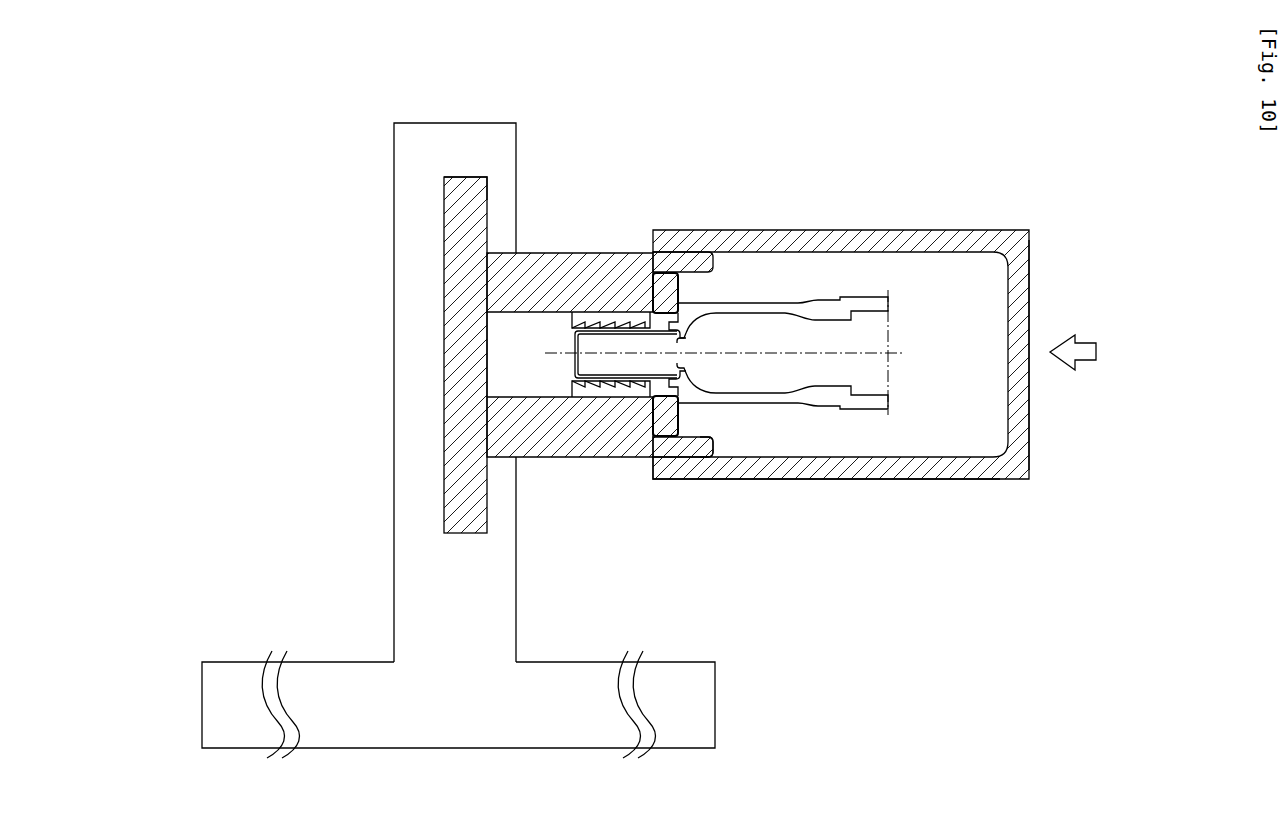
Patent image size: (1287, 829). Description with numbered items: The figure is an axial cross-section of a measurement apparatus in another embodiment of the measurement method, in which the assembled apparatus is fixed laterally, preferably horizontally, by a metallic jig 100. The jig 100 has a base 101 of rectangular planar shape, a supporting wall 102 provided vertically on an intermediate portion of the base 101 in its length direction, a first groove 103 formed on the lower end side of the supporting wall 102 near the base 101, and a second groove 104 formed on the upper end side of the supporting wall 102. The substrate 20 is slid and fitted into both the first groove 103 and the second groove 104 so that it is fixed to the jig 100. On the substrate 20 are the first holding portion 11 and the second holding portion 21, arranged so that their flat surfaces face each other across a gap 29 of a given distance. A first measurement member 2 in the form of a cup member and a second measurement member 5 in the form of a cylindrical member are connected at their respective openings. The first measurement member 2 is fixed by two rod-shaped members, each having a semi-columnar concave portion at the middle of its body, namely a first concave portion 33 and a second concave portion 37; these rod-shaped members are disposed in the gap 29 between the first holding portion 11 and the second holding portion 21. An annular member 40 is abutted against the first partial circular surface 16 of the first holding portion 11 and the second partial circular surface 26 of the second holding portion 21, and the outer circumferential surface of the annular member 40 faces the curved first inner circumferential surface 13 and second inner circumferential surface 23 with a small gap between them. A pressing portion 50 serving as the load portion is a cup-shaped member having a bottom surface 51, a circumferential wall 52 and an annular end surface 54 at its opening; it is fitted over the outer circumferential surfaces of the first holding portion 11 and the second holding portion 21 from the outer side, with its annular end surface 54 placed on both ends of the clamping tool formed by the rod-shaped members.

The jig 100 is at (386, 187).
The base 101 is at (468, 735).
The supporting wall 102 is at (397, 270).
The first groove 103 is at (470, 520).
The second groove 104 is at (460, 177).
The substrate 20 is at (435, 490).
The first holding portion 11 is at (563, 262).
The second holding portion 21 is at (517, 438).
The gap 29 is at (497, 355).
The first inner circumferential surface 13 is at (703, 250).
The second inner circumferential surface 23 is at (727, 457).
The annular member 40 is at (680, 448).
The first partial circular surface 16 is at (658, 278).
The second partial circular surface 26 is at (650, 443).
The first concave portion 33 is at (600, 311).
The second concave portion 37 is at (578, 397).
The first measurement member 2 is at (575, 360).
The second measurement member 5 is at (800, 400).
The pressing portion 50 is at (1034, 416).
The bottom surface 51 is at (1032, 314).
The circumferential wall 52 is at (852, 479).
The annular end surface 54 is at (660, 458).